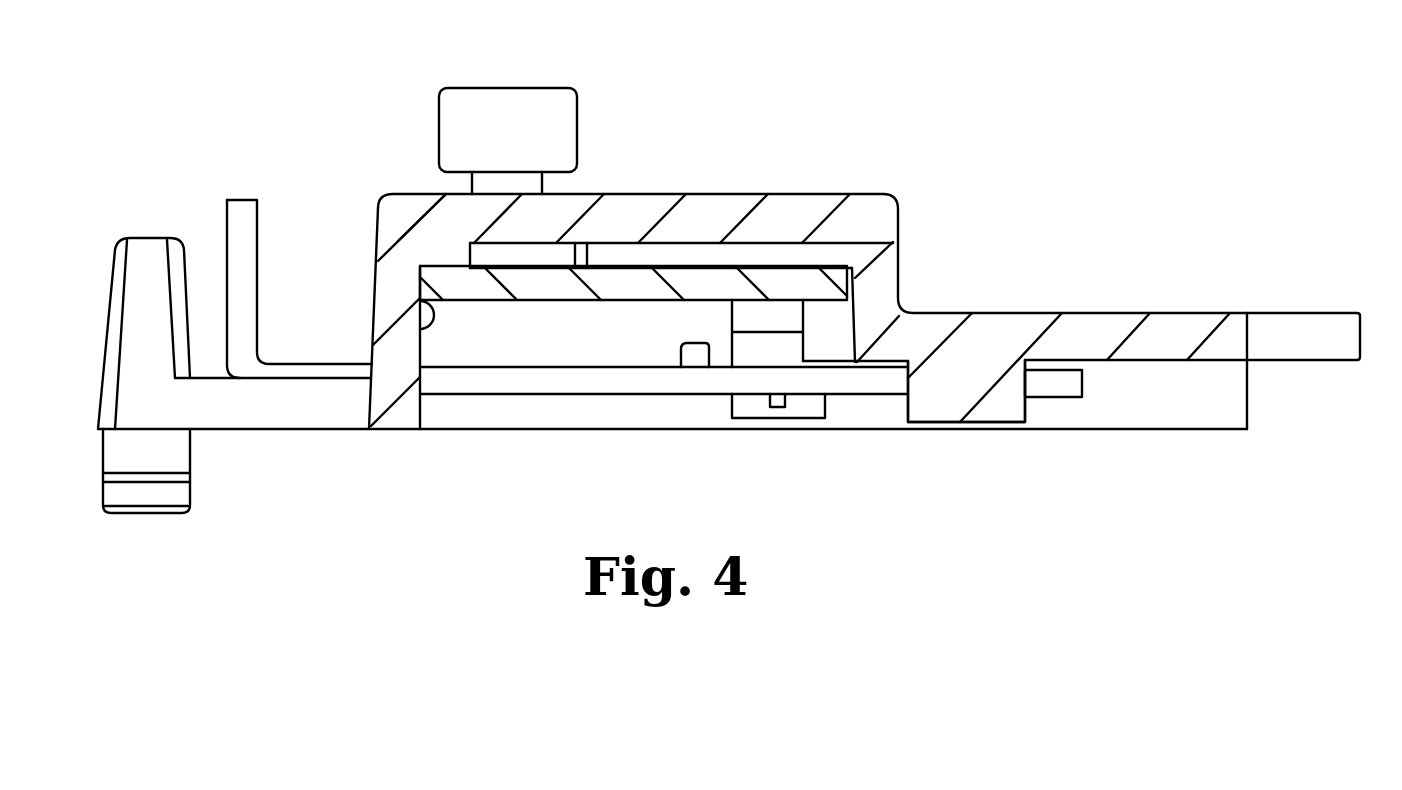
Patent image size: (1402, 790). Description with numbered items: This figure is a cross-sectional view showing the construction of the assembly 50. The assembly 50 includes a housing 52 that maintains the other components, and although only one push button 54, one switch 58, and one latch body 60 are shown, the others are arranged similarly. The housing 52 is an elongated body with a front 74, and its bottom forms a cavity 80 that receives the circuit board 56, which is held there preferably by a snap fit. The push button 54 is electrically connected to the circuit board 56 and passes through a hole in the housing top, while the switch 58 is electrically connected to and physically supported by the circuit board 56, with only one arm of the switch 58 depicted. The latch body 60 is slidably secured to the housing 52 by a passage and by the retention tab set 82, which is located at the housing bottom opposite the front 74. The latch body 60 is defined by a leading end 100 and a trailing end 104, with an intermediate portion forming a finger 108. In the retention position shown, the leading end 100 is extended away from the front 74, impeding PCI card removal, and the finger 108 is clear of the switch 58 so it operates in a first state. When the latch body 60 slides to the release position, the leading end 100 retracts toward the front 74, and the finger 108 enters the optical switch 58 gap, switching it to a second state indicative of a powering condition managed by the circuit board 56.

The assembly 50 is at (1014, 118).
The housing 52 is at (805, 190).
The push button 54 is at (531, 83).
The circuit board 56 is at (690, 263).
The switch 58 is at (806, 422).
The latch body 60 is at (312, 382).
The front 74 is at (372, 317).
The cavity 80 is at (798, 255).
The retention tab set 82 is at (987, 425).
The leading end 100 is at (258, 263).
The trailing end 104 is at (1082, 380).
The finger 108 is at (683, 349).